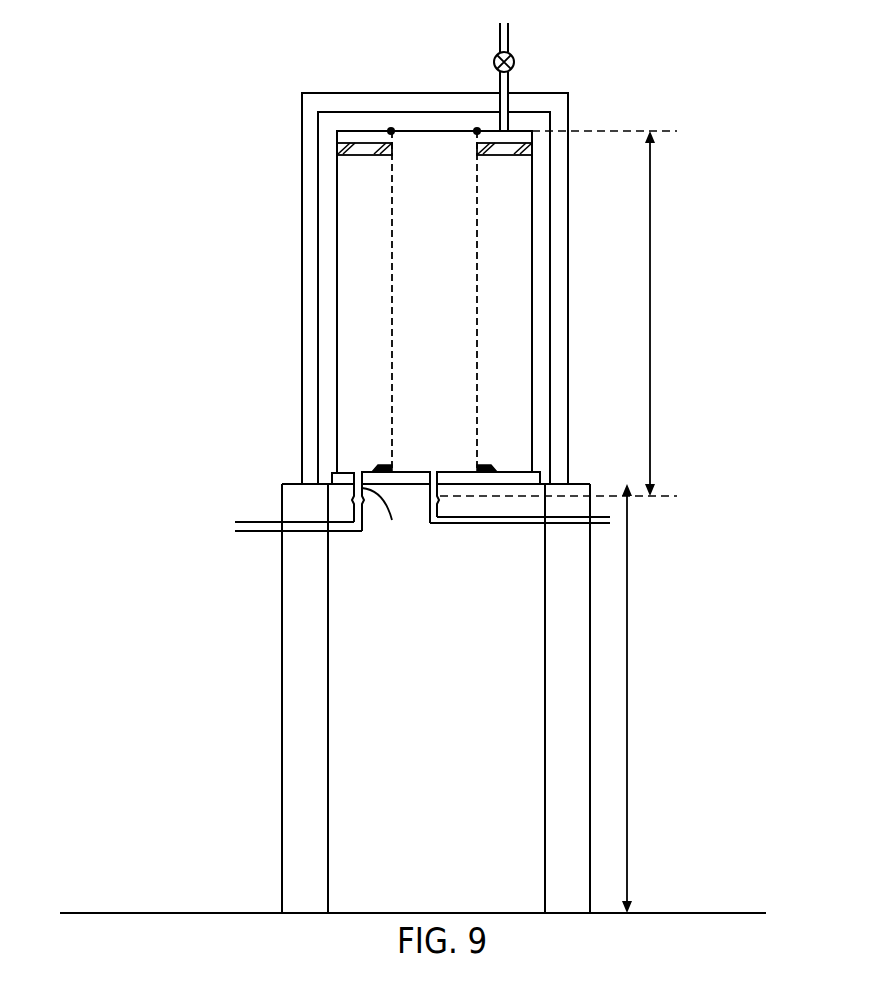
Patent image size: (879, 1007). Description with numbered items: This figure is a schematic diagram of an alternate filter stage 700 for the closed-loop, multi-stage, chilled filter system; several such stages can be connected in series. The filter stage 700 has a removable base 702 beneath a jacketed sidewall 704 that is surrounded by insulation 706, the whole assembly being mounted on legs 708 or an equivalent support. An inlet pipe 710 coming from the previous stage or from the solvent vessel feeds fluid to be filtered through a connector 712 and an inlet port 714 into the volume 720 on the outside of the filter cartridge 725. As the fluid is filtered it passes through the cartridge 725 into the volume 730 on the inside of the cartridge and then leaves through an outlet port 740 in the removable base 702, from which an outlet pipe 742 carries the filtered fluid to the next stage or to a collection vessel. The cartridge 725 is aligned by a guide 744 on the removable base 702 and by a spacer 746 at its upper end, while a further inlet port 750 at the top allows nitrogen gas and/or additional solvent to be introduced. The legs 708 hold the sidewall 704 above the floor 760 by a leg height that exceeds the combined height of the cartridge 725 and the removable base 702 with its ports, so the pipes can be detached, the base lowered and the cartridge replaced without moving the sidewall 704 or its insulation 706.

The filter stage 700 is at (123, 102).
The removable base 702 is at (410, 486).
The jacketed sidewall 704 is at (318, 278).
The insulation 706 is at (302, 180).
The legs 708 is at (282, 677).
The inlet pipe 710 is at (252, 518).
The connector 712 is at (368, 490).
The inlet port 714 is at (391, 516).
The volume 720 is at (383, 373).
The filter cartridge 725 is at (391, 288).
The volume 730 is at (455, 373).
The outlet port 740 is at (438, 488).
The outlet pipe 742 is at (520, 524).
The guide 744 is at (484, 465).
The spacer 746 is at (522, 156).
The inlet port 750 is at (498, 82).
The floor 760 is at (172, 913).